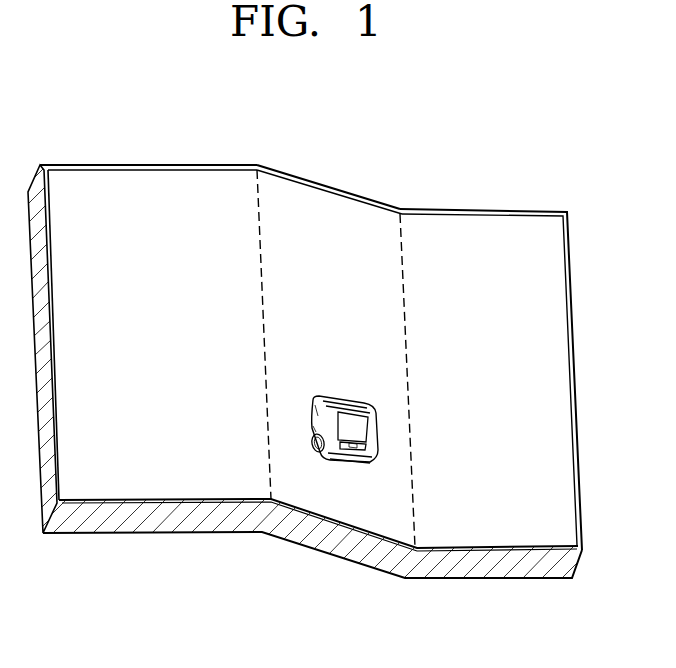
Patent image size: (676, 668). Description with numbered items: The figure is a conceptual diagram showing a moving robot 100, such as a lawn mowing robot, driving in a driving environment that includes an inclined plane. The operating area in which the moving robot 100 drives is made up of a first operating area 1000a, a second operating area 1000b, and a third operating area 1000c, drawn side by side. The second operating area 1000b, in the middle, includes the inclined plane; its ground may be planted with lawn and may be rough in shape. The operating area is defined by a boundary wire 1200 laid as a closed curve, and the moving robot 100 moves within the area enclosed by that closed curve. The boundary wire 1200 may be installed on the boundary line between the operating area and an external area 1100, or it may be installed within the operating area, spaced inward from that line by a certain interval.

The moving robot 100 is at (343, 399).
The first operating area 1000a is at (39, 160).
The second operating area 1000b is at (400, 160).
The third operating area 1000c is at (565, 160).
The external area 1100 is at (320, 538).
The boundary wire 1200 is at (170, 498).